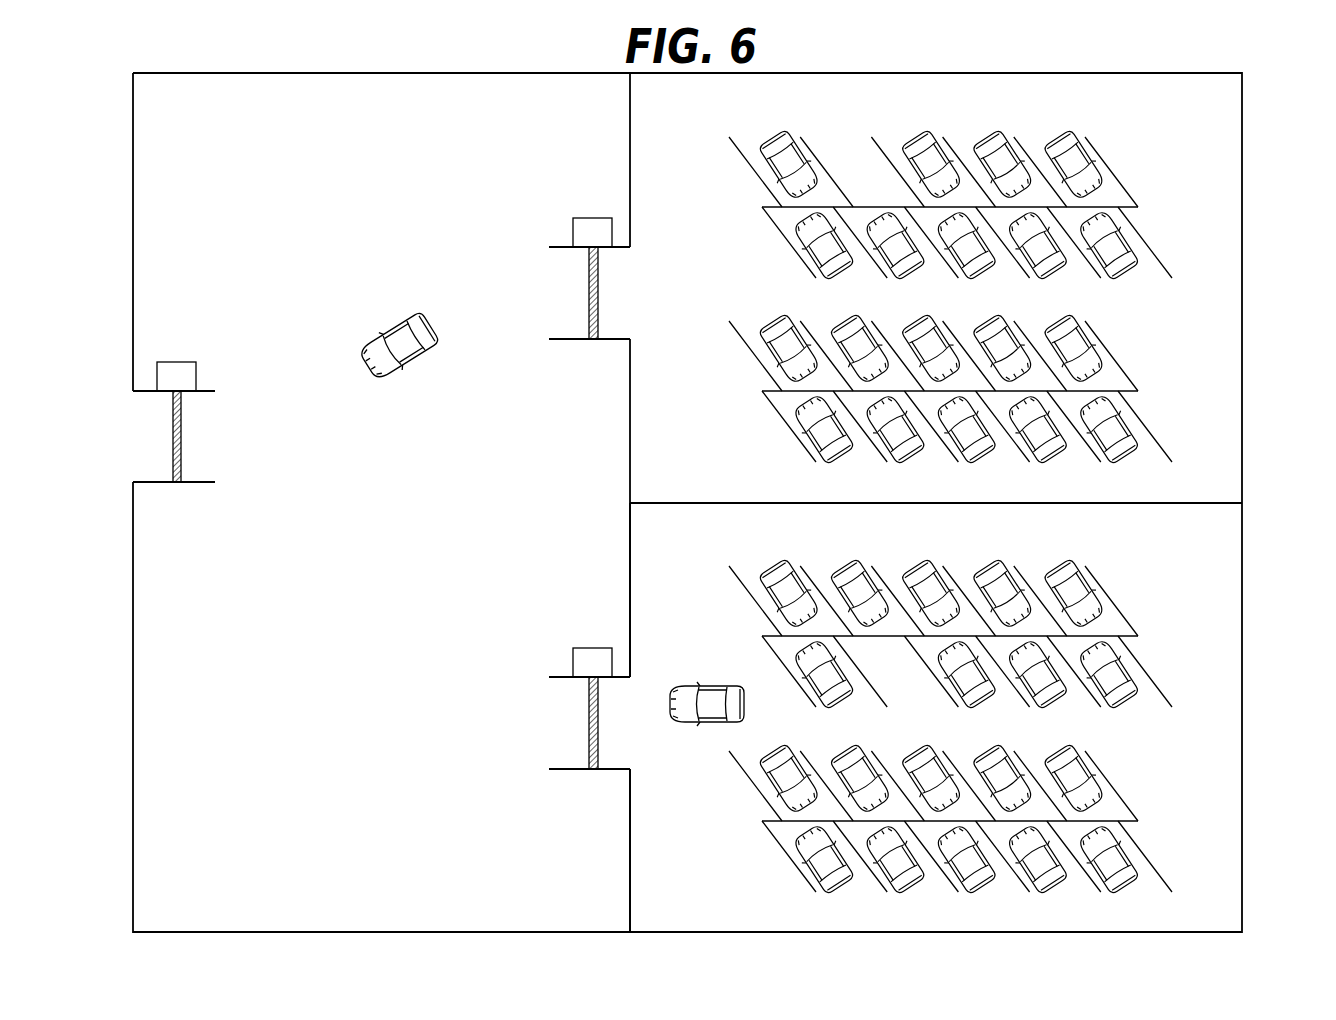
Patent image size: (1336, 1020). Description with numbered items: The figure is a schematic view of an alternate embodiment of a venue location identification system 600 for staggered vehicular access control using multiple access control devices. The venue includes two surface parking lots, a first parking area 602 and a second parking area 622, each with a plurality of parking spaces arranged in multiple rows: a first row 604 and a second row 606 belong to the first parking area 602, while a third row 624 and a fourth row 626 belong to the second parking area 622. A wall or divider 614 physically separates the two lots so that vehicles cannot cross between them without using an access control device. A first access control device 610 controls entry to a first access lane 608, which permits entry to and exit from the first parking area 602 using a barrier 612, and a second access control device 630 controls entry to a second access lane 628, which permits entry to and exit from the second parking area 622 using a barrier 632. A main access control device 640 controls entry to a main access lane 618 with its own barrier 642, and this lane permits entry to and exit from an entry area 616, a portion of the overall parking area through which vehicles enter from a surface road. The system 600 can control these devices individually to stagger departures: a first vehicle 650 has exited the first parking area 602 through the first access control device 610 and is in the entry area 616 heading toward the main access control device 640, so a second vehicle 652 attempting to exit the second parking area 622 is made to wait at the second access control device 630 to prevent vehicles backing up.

The venue location identification system 600 is at (1222, 56).
The first parking area 602 is at (1208, 297).
The first row 604 is at (1153, 191).
The second row 606 is at (1153, 376).
The first access lane 608 is at (639, 305).
The first access control device 610 is at (592, 217).
The barrier 612 is at (588, 294).
The wall or divider 614 is at (1112, 504).
The entry area 616 is at (381, 557).
The main access lane 618 is at (221, 444).
The second parking area 622 is at (1208, 726).
The third row 624 is at (1153, 620).
The fourth row 626 is at (1153, 807).
The second access lane 628 is at (639, 735).
The second access control device 630 is at (592, 647).
The barrier 632 is at (588, 724).
The main access control device 640 is at (176, 361).
The entrance gate arm 642 is at (173, 436).
The first vehicle 650 is at (393, 332).
The second vehicle 652 is at (707, 687).